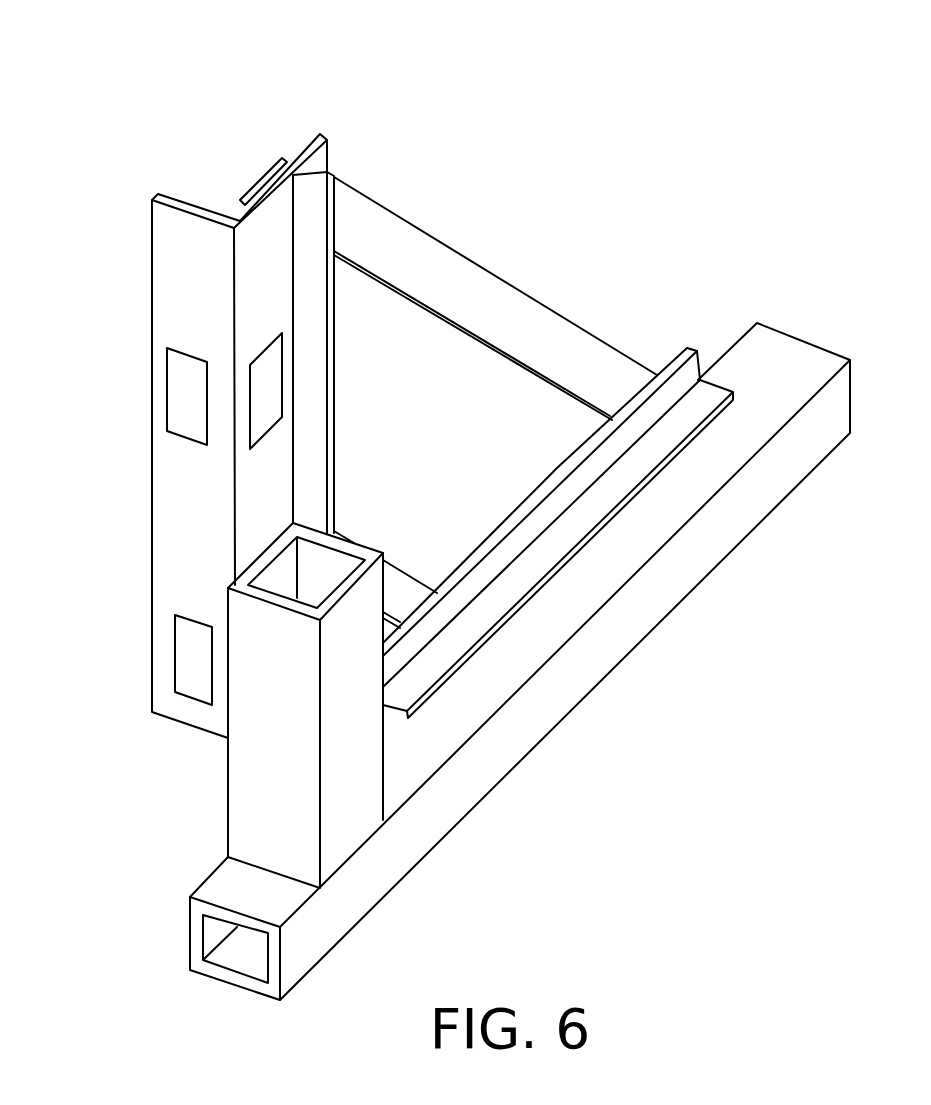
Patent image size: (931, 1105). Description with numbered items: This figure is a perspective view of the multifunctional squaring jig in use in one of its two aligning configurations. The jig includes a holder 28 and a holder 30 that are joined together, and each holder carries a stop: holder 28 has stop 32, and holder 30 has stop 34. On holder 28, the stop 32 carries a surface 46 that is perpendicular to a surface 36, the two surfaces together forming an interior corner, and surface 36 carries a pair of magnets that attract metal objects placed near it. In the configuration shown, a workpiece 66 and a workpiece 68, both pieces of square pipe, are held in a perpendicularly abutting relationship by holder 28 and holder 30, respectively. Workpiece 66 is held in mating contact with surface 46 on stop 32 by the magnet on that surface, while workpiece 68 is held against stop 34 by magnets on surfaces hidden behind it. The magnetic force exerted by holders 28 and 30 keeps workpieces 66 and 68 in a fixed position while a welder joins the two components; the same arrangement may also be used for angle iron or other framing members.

The holder 28 is at (207, 207).
The holder 30 is at (674, 362).
The stop 32 is at (330, 162).
The stop 34 is at (713, 410).
The surface 36 is at (257, 293).
The surface 46 is at (315, 378).
The workpiece 66 is at (263, 752).
The workpiece 68 is at (600, 680).